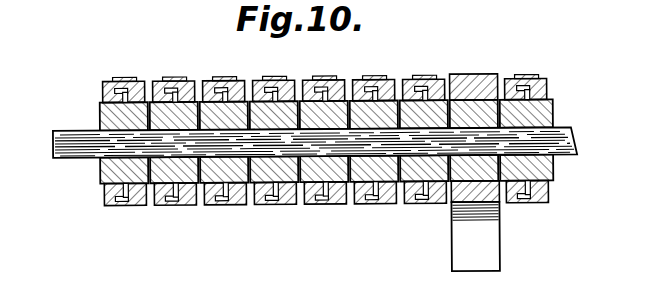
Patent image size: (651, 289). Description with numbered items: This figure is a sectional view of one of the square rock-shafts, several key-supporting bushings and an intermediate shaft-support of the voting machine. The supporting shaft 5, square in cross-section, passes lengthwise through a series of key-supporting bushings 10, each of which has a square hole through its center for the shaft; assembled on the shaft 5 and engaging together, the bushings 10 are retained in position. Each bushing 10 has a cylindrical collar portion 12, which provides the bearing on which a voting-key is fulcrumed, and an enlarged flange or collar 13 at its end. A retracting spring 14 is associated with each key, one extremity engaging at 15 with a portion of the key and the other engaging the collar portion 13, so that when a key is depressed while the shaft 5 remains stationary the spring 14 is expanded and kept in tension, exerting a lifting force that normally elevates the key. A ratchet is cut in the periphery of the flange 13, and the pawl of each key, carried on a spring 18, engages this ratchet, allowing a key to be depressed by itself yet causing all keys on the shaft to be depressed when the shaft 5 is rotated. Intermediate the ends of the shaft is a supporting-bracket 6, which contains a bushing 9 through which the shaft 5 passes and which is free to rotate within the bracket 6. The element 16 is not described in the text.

The supporting shaft 5 is at (53, 138).
The supporting-bracket 6 is at (478, 80).
The bushing 9 is at (456, 103).
The bushing 10 is at (99, 108).
The cylindrical collar portion 12 is at (99, 172).
The flange or collar 13 is at (191, 205).
The spring 14 is at (272, 204).
The spring engagement point 15 is at (115, 89).
The key slot 16 is at (288, 80).
The spring 18 is at (138, 78).